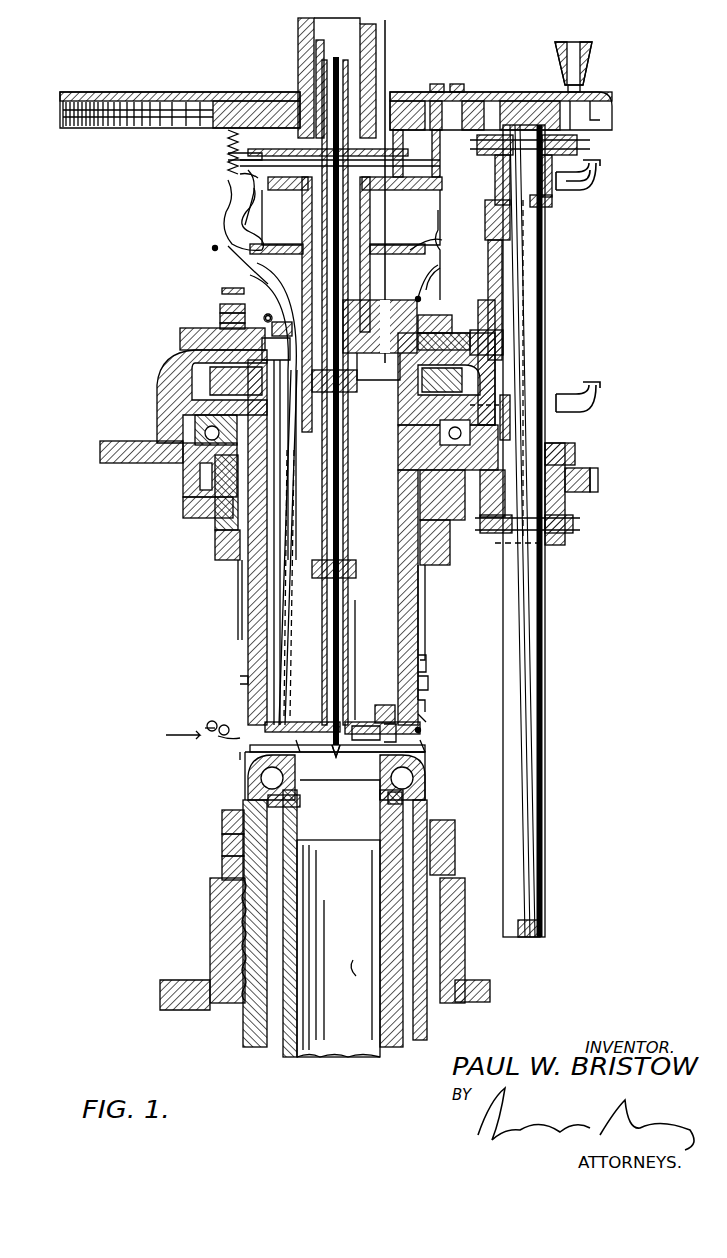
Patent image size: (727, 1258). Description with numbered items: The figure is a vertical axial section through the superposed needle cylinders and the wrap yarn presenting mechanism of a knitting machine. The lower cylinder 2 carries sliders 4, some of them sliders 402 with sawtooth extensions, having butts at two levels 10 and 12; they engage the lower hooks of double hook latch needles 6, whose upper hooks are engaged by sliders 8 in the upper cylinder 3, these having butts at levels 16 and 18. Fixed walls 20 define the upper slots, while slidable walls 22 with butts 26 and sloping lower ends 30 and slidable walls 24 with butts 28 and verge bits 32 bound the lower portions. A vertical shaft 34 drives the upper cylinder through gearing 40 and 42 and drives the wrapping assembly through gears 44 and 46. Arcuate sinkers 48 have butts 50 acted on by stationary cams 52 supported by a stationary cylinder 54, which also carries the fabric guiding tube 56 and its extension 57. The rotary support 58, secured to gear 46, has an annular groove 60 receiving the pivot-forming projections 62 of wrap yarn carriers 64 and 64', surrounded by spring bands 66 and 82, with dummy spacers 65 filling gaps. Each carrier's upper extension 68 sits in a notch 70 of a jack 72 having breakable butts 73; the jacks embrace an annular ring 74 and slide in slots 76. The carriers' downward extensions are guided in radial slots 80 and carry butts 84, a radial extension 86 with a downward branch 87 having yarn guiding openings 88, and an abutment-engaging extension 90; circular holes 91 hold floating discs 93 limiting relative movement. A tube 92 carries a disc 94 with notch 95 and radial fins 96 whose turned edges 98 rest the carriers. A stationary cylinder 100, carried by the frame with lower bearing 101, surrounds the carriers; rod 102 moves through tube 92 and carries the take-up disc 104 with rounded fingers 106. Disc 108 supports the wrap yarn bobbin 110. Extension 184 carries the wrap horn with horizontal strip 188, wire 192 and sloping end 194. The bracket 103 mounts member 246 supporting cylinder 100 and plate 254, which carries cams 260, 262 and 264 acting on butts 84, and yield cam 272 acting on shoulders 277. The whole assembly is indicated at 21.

The lower cylinder 2 is at (420, 790).
The upper cylinder 3 is at (420, 641).
The sliders 4 is at (226, 842).
The double hook latch needles 6 is at (248, 768).
The sliders 8 is at (238, 576).
The butt level 10 is at (226, 812).
The butt level 12 is at (226, 866).
The butt level 16 is at (238, 598).
The butt level 18 is at (228, 552).
The fixed walls 20 is at (420, 606).
The pump assembly 21 is at (172, 730).
The slidable walls 22 is at (248, 656).
The slidable walls 24 is at (426, 664).
The butts 26 is at (240, 680).
The butts 28 is at (428, 684).
The sloping lower ends 30 is at (286, 726).
The verge bits 32 is at (424, 726).
The vertical shaft 34 is at (525, 800).
The gearing 40 is at (592, 478).
The gearing 42 is at (190, 482).
The gear 44 is at (580, 132).
The gear 46 is at (212, 120).
The arcuate sinkers 48 is at (418, 756).
The butts 50 is at (362, 782).
The stationary cams 52 is at (425, 784).
The stationary cylinder 54 is at (382, 912).
The fabric guiding tube 56 is at (300, 800).
The extension 57 is at (349, 960).
The rotary support 58 is at (400, 370).
The annular groove 60 is at (436, 246).
The pivot-forming projections 62 is at (226, 230).
The wrap yarn carrier 64 is at (297, 547).
The wrap yarn carrier 64' is at (250, 585).
The dummy spacers 65 is at (440, 268).
The spring band 66 is at (214, 248).
The upper extension 68 is at (246, 192).
The notch 70 is at (228, 156).
The jack 72 is at (262, 152).
The butts 73 is at (228, 136).
The annular ring 74 is at (418, 156).
The slots 76 is at (238, 176).
The radial slot 80 is at (266, 345).
The spring band 82 is at (412, 300).
The butts 84 is at (282, 328).
The radially directed extension 86 is at (230, 719).
The downwardly extending branch 87 is at (223, 743).
The yarn guiding openings 88 is at (212, 720).
The abutment-engaging extension 90 is at (205, 726).
The circular holes 91 is at (266, 314).
The tube 92 is at (350, 455).
The disc 93 is at (280, 312).
The disc 94 is at (363, 726).
The notch 95 is at (337, 748).
The radial fins 96 is at (384, 727).
The turned edges 98 is at (388, 714).
The stationary cylinder 100 is at (398, 662).
The lower bearing 101 is at (450, 336).
The rod 102 is at (340, 520).
The main supporting bracket 103 is at (165, 378).
The fabric take-up disc 104 is at (338, 755).
The rounded fingers 106 is at (306, 752).
The disc 108 is at (596, 96).
The wrap yarn bobbin 110 is at (588, 60).
The extension 184 is at (424, 700).
The horizontal strip 188 is at (240, 752).
The wire 192 is at (421, 732).
The sloping end 194 is at (441, 749).
The member 246 is at (430, 392).
The plate 254 is at (180, 340).
The cam 260 is at (220, 306).
The cam 262 is at (220, 318).
The cam 264 is at (220, 326).
The yield cam 272 is at (224, 290).
The shoulders 277 is at (262, 254).
The sliders with sawtooth extensions 402 is at (215, 896).